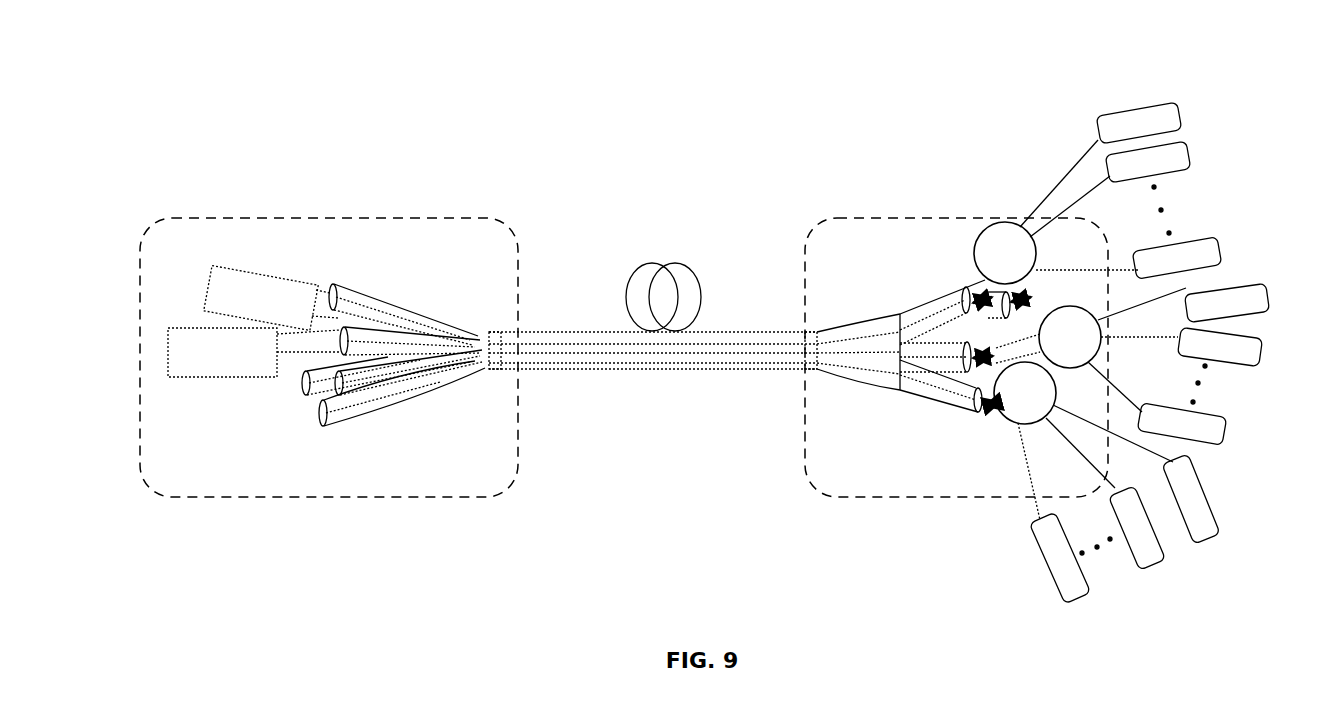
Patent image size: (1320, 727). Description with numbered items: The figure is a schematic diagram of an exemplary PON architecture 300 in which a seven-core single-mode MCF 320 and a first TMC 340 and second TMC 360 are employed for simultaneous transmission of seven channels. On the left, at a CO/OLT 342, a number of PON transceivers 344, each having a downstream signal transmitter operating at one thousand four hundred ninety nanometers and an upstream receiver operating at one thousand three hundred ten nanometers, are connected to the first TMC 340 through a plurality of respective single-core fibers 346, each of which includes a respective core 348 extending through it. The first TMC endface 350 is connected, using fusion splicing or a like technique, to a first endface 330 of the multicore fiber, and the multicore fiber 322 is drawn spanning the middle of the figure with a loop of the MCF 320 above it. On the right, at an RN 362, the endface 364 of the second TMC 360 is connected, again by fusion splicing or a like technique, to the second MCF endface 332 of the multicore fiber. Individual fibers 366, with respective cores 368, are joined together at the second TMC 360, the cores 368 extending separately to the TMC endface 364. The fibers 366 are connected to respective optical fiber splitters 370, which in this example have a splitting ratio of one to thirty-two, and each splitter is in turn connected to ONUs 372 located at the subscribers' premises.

The PON architecture 300 is at (679, 32).
The 7-core single-mode MCF 320 is at (686, 254).
The feeder fiber bundle 322 is at (585, 364).
The first endface of single-mode MCF 330 is at (470, 334).
The second MCF endface 332 is at (838, 334).
The first TMC 340 is at (381, 361).
The CO/OLT 342 is at (395, 487).
The PON transceivers 344 is at (201, 300).
The single-core fibers 346 is at (342, 415).
The core 348 is at (388, 376).
The first TMC endface 350 is at (508, 370).
The second TMC 360 is at (928, 361).
The RN 362 is at (960, 487).
The endface of second TMC 364 is at (806, 366).
The individual fibers 366 is at (964, 407).
The cores 368 is at (926, 380).
The optical fiber splitters 370 is at (977, 238).
The ONUs 372 is at (1238, 209).